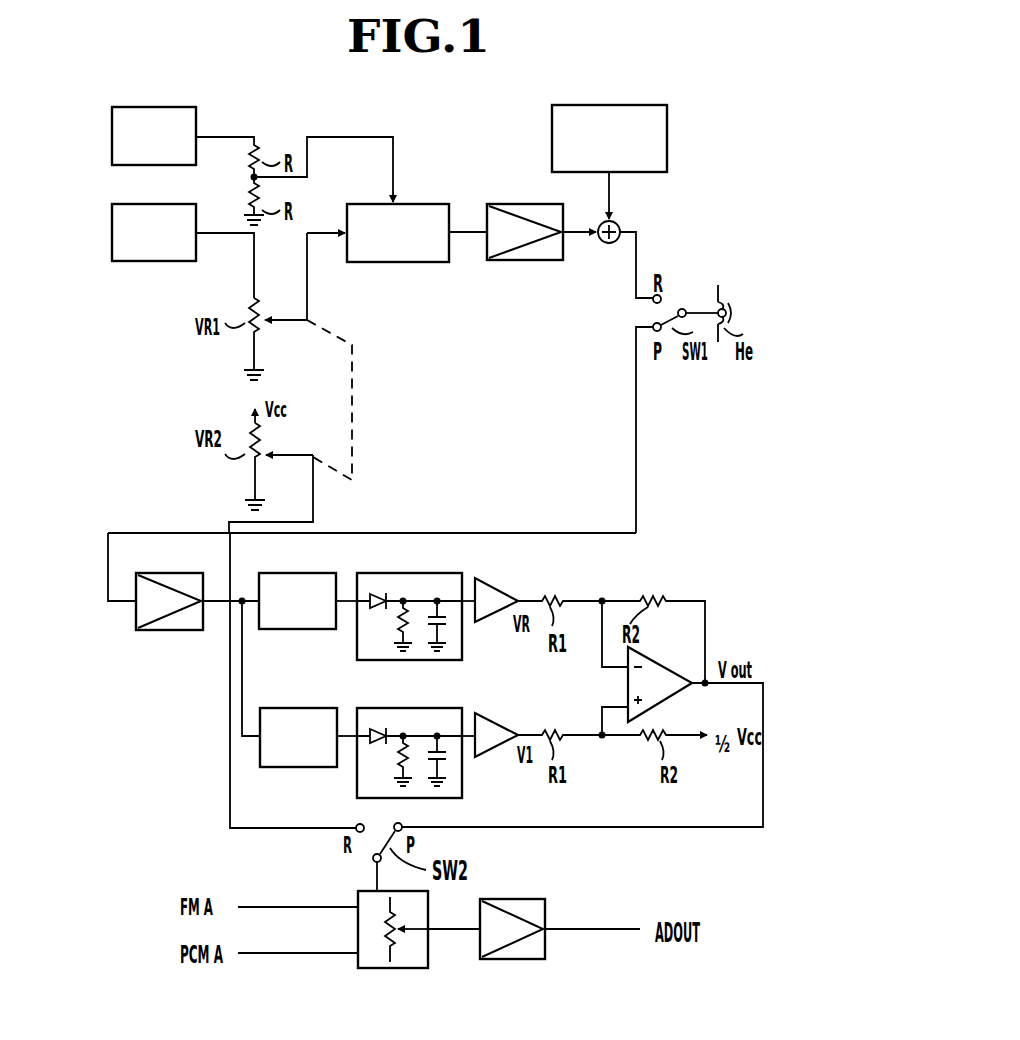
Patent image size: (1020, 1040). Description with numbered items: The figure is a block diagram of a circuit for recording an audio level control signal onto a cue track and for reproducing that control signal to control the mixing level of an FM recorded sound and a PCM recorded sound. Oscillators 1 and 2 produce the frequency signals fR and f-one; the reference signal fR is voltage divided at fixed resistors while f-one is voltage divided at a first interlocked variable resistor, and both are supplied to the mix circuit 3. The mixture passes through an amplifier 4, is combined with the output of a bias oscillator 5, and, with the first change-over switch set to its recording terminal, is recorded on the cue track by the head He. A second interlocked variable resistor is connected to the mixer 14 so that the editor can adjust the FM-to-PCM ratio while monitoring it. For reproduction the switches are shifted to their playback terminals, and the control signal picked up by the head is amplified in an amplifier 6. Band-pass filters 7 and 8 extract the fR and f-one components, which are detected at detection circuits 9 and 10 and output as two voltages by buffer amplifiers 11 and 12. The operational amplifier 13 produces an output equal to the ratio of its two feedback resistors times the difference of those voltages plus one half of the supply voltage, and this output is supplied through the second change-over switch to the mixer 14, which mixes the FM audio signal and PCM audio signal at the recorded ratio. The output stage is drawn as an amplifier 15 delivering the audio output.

The oscillator 1 is at (195, 108).
The oscillator 2 is at (195, 205).
The mix circuit 3 is at (420, 204).
The amplifier 4 is at (530, 204).
The bias oscillator 5 is at (632, 105).
The amplifier 6 is at (150, 630).
The band-pass filter 7 is at (312, 573).
The band-pass filter 8 is at (312, 708).
The detection circuit 9 is at (440, 573).
The detection circuit 10 is at (440, 708).
The buffer amplifier 11 is at (503, 586).
The buffer amplifier 12 is at (503, 721).
The operational amplifier 13 is at (665, 660).
The mixer 14 is at (410, 968).
The output amplifier 15 is at (530, 959).